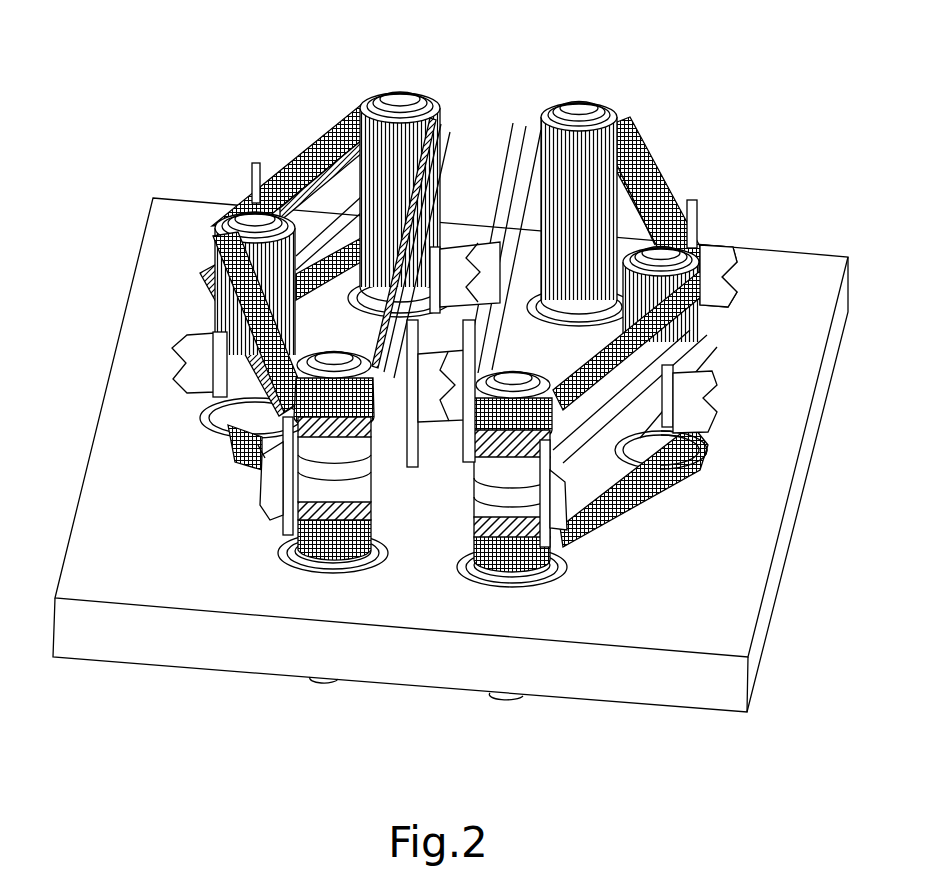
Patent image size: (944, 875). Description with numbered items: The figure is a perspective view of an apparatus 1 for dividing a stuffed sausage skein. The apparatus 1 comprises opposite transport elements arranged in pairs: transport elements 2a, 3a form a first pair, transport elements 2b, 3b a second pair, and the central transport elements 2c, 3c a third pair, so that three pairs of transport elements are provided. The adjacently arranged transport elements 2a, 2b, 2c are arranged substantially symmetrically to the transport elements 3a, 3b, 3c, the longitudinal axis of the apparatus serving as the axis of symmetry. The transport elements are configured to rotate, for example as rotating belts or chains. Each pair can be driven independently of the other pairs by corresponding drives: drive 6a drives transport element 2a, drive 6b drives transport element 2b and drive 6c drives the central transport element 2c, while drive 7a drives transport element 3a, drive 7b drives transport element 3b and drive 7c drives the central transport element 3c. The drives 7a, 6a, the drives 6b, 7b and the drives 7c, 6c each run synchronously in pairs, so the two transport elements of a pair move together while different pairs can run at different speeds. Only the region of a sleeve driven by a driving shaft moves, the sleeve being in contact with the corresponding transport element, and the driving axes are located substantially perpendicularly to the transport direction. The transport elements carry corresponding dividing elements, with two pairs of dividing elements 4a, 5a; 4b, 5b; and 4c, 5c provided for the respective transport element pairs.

The transport device 1 is at (812, 107).
The transport element 2a is at (700, 322).
The transport element 2b is at (490, 580).
The central transport element 2c is at (517, 505).
The transport element 3a is at (250, 440).
The transport element 3b is at (213, 267).
The central transport element 3c is at (263, 450).
The dividing element 4a is at (420, 405).
The dividing element 4b is at (553, 510).
The dividing element 4c is at (690, 388).
The dividing element 5a is at (433, 387).
The dividing element 5b is at (268, 490).
The dividing element 5c is at (183, 350).
The drive 6a is at (570, 103).
The drive 6b is at (697, 230).
The drive 6c is at (647, 460).
The drive 7a is at (393, 93).
The drive 7b is at (248, 214).
The drive 7c is at (387, 445).